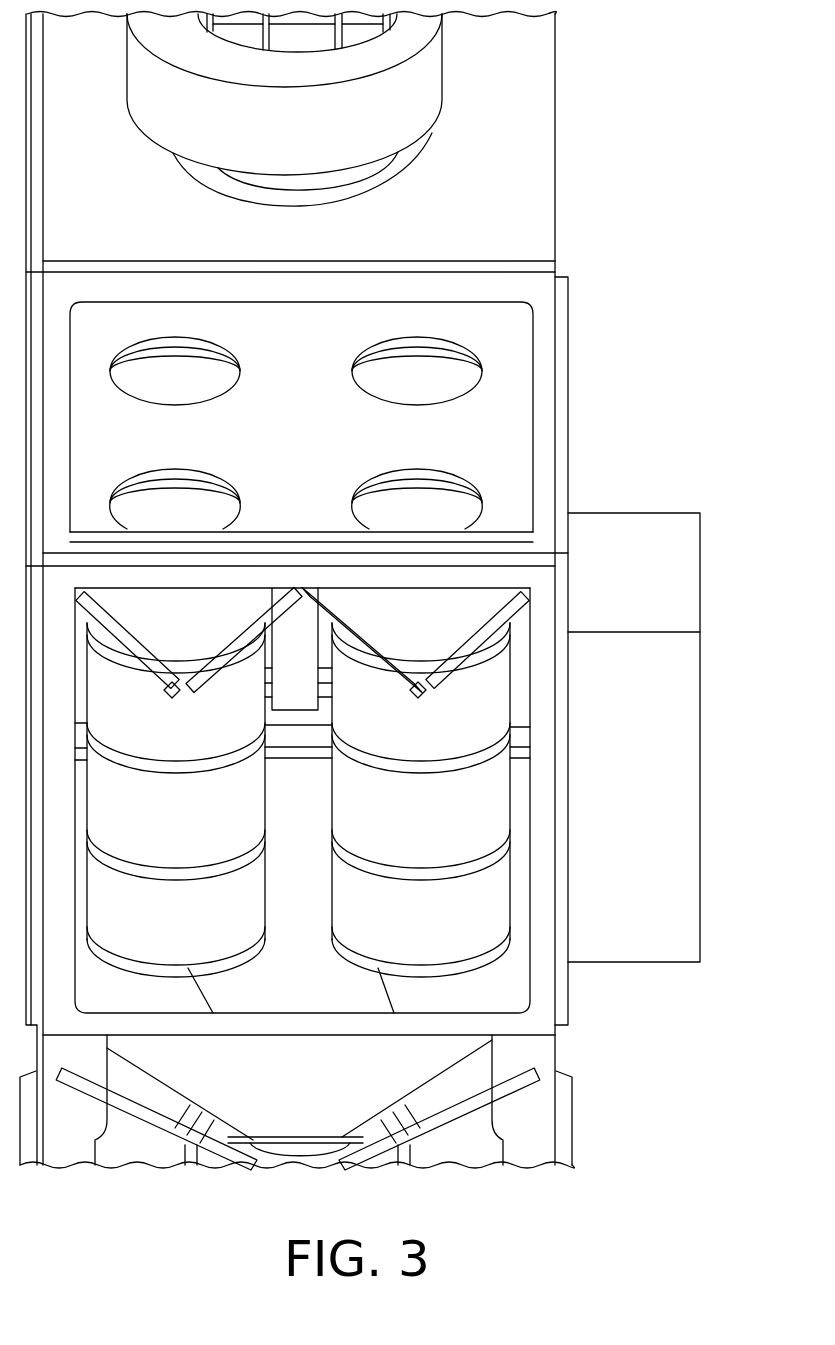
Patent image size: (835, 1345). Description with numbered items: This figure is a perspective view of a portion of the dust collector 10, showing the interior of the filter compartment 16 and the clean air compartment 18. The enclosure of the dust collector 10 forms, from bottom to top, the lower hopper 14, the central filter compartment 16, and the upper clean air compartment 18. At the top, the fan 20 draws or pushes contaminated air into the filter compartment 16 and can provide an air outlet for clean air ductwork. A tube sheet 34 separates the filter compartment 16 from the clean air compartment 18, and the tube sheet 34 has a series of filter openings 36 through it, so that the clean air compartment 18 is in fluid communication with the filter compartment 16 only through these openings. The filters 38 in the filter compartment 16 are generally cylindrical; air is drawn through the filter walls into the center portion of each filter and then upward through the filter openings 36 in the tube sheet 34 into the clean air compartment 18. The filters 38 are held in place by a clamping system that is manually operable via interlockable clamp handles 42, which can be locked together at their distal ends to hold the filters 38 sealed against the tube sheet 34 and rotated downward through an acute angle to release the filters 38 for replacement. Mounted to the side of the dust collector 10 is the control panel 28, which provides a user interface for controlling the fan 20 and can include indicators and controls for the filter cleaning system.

The dust collector 10 is at (715, 170).
The lower hopper 14 is at (323, 1105).
The filter compartment 16 is at (558, 1008).
The clean air compartment 18 is at (563, 357).
The fan 20 is at (443, 60).
The control panel 28 is at (700, 773).
The tube sheet 34 is at (300, 440).
The filter openings 36 is at (182, 337).
The filters 38 is at (222, 968).
The clamp handles 42 is at (160, 675).